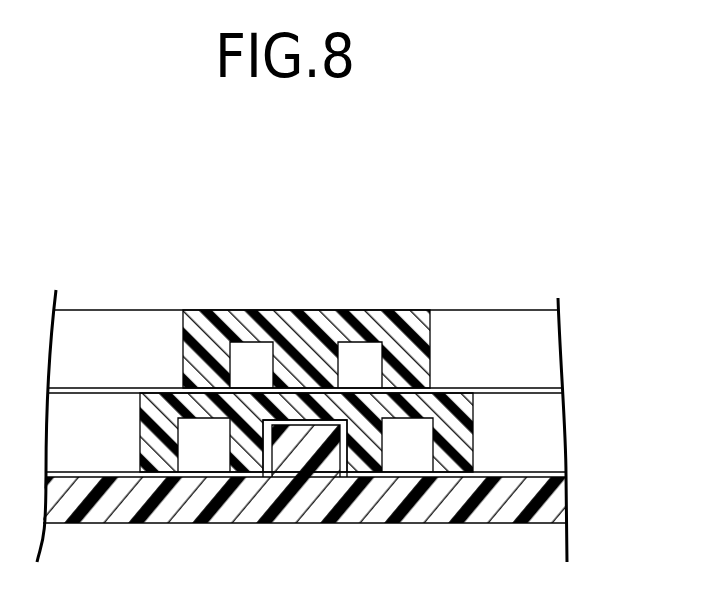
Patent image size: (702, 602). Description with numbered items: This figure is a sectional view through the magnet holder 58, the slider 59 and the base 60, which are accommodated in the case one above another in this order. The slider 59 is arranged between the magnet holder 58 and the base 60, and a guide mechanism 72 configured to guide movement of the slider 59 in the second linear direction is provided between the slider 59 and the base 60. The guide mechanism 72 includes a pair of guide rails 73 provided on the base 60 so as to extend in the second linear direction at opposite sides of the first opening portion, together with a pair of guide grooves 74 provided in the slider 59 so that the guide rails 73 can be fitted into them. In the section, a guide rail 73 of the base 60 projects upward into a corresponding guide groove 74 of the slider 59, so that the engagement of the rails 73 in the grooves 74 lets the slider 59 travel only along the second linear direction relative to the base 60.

The magnet holder 58 is at (355, 322).
The slider 59 is at (458, 450).
The base 60 is at (420, 507).
The guide mechanism 72 is at (279, 402).
The guide rails 73 is at (318, 443).
The guide grooves 74 is at (347, 460).